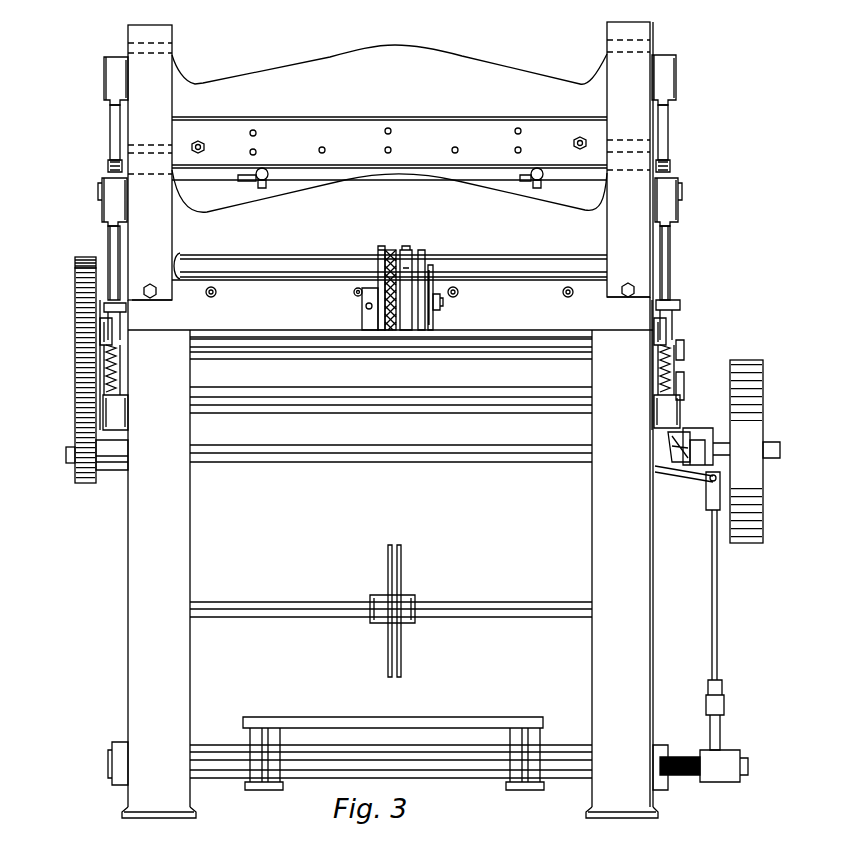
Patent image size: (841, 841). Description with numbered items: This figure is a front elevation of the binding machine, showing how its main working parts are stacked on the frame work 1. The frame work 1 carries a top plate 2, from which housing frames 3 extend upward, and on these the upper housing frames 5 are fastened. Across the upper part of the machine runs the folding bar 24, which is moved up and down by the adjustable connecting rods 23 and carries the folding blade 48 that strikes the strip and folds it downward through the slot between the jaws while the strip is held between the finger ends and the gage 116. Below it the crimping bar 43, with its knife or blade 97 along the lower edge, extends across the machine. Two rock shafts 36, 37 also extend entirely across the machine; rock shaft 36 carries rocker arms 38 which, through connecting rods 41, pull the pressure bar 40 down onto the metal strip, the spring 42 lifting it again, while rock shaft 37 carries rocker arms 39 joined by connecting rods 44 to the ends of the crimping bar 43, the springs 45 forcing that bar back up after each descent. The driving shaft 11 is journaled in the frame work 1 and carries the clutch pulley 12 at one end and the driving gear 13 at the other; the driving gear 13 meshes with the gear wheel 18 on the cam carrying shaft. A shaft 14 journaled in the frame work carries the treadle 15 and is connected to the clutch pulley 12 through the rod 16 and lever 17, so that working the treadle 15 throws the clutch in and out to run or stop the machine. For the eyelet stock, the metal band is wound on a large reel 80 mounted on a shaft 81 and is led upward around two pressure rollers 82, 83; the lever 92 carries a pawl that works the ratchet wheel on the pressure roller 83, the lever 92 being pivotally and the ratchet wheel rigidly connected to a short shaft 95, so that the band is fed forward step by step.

The frame work 1 is at (390, 420).
The top plate 2 is at (391, 298).
The housing frames 3 is at (382, 235).
The upper housing frames 5 is at (382, 100).
The driving shaft 11 is at (552, 462).
The clutch pulley 12 is at (739, 543).
The driving gear 13 is at (108, 478).
The shaft 14 is at (120, 775).
The treadle 15 is at (524, 710).
The rod 16 is at (712, 600).
The lever 17 is at (718, 722).
The gear wheel 18 is at (78, 257).
The adjustable connecting rods 23 is at (110, 130).
The folding bar 24 is at (389, 71).
The rock shaft 36 is at (380, 359).
The rock shaft 37 is at (466, 410).
The rocker arms 38 is at (120, 344).
The rocker arms 39 is at (115, 418).
The pressure bar 40 is at (128, 247).
The connecting rods 41 is at (108, 318).
The spring 42 is at (108, 167).
The crimping bar 43 is at (683, 186).
The connecting rods 44 is at (75, 376).
The springs 45 is at (120, 364).
The folding blade 48 is at (389, 148).
The reel 80 is at (401, 571).
The shaft 81 is at (232, 617).
The pressure roller 82 is at (388, 252).
The pressure roller 83 is at (378, 320).
The lever 92 is at (432, 312).
The short shaft 95 is at (442, 300).
The knife or blade 97 is at (570, 270).
The gage 116 is at (240, 180).